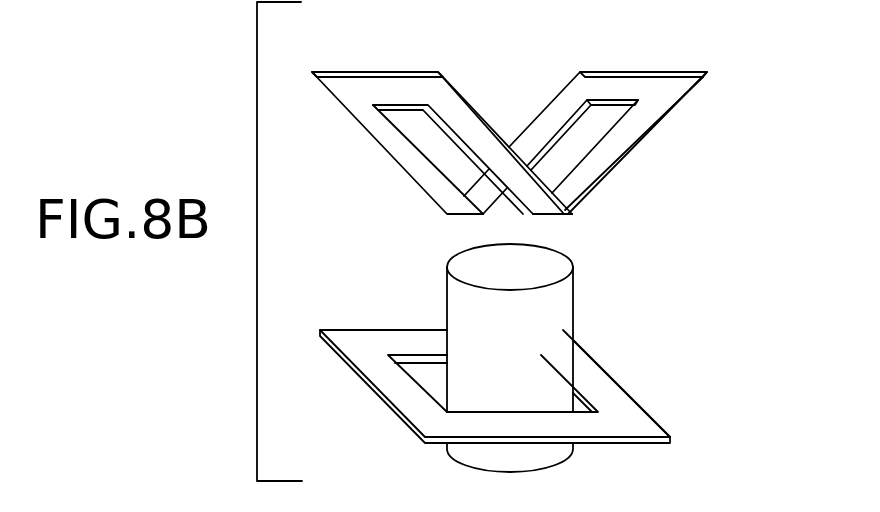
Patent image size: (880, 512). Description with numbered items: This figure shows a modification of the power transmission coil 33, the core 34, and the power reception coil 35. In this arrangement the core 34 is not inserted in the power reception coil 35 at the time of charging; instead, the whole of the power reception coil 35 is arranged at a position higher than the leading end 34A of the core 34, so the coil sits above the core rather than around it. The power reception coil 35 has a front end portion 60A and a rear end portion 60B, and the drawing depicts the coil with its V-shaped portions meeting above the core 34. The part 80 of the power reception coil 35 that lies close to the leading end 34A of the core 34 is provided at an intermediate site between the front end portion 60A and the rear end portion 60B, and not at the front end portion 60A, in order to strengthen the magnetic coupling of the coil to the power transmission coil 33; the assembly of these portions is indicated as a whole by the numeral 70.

The power transmission coil 33 is at (368, 392).
The core 34 is at (457, 310).
The leading end 34A is at (557, 265).
The power reception coil 35 is at (452, 82).
The front end portion 60A is at (372, 72).
The rear end portion 60B is at (634, 72).
The V-shaped member 70 is at (420, 232).
The part close to the leading end 80 is at (558, 217).